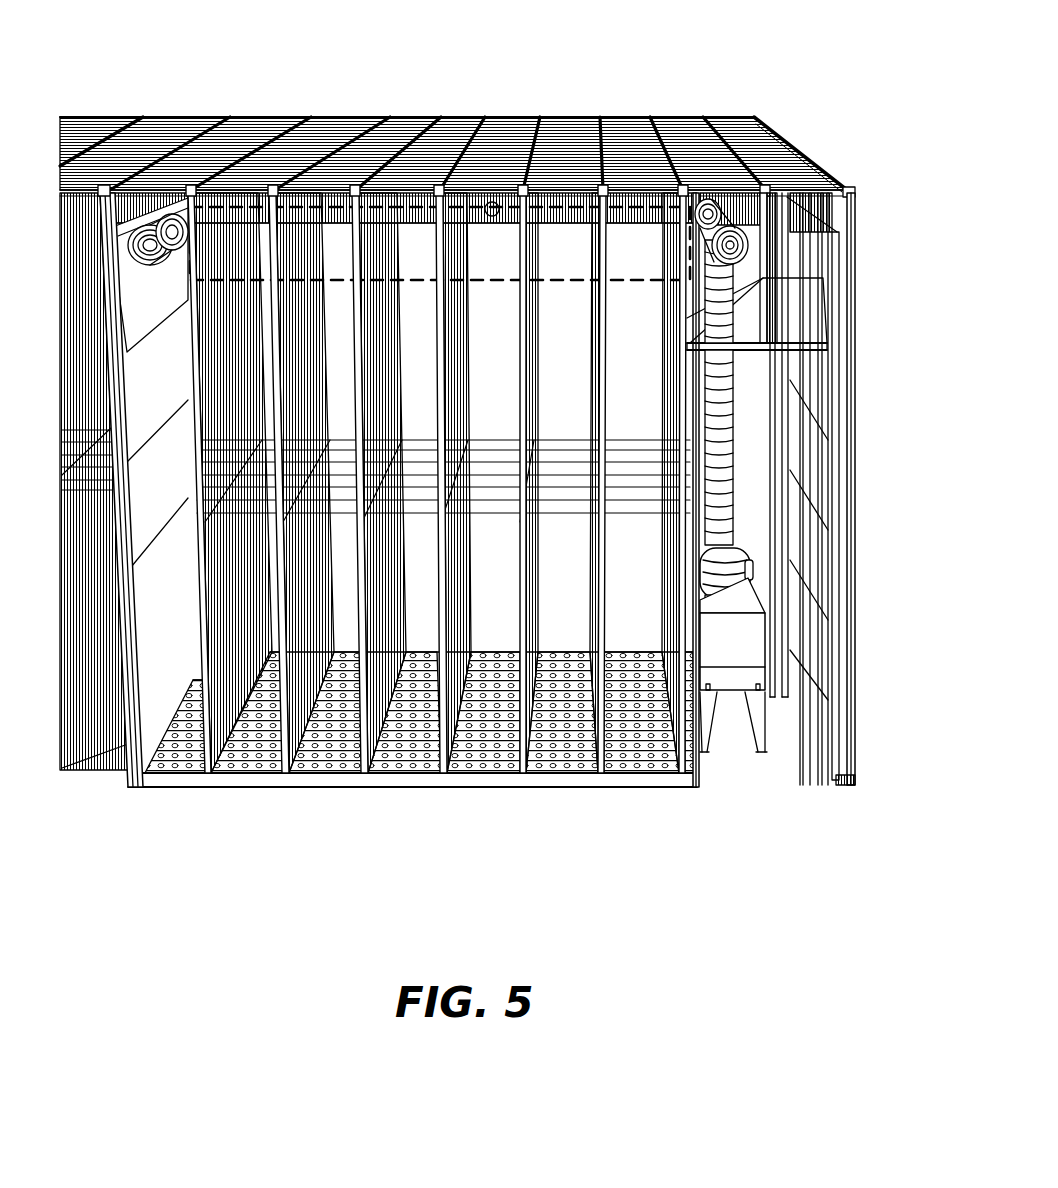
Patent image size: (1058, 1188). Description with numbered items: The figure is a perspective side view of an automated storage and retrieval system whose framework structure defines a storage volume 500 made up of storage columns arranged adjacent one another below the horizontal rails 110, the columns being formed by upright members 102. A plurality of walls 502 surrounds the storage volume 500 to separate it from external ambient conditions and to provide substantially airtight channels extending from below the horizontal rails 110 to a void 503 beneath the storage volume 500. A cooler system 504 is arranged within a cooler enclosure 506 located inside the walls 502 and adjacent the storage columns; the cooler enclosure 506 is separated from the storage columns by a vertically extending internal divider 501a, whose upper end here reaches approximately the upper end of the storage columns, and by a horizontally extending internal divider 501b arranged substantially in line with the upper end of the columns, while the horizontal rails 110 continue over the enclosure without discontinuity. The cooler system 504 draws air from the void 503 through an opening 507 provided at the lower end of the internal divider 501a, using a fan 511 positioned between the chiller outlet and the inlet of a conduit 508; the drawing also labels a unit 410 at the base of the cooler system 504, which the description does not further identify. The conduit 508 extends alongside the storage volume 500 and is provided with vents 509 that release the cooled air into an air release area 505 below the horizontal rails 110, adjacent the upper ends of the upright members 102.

The storage volume 500 is at (447, 106).
The vents 509 is at (171, 238).
The air release area 505 is at (494, 250).
The horizontal rails 110 is at (845, 190).
The horizontally extending internal divider 501b is at (719, 326).
The conduit 508 is at (739, 376).
The cooler enclosure 506 is at (784, 429).
The fan 511 is at (729, 560).
The cooler system 504 is at (771, 604).
The control unit 410 is at (752, 659).
The upright members 102 is at (61, 713).
The walls 502 is at (131, 766).
The void 503 is at (485, 783).
The opening 507 is at (684, 783).
The vertically extending internal divider 501a is at (697, 724).